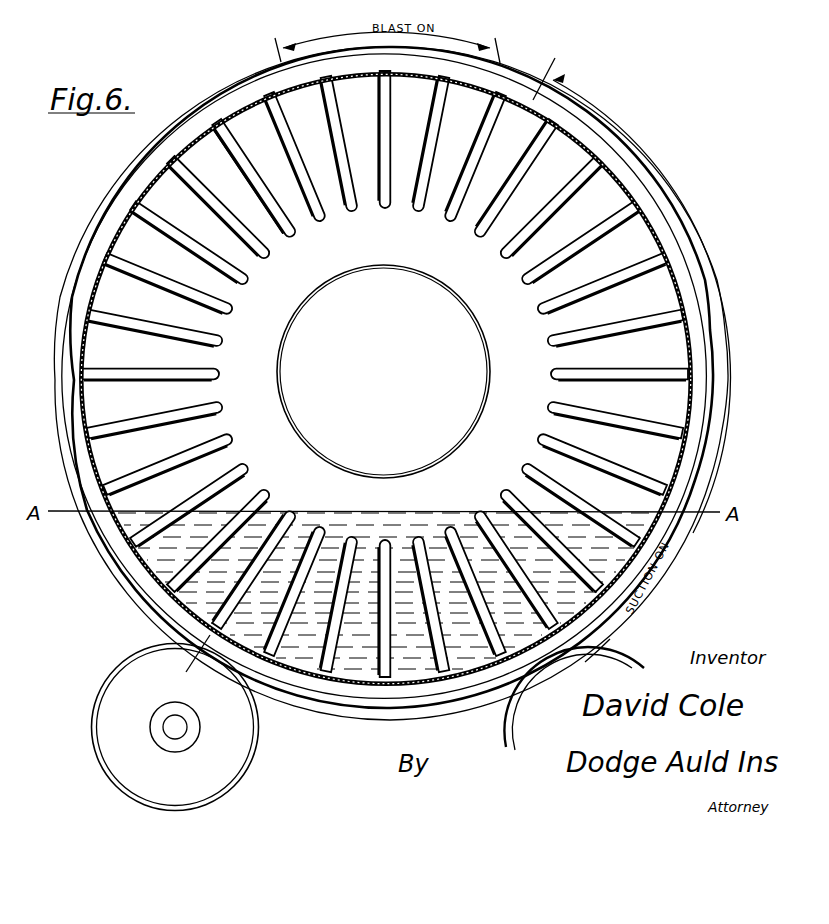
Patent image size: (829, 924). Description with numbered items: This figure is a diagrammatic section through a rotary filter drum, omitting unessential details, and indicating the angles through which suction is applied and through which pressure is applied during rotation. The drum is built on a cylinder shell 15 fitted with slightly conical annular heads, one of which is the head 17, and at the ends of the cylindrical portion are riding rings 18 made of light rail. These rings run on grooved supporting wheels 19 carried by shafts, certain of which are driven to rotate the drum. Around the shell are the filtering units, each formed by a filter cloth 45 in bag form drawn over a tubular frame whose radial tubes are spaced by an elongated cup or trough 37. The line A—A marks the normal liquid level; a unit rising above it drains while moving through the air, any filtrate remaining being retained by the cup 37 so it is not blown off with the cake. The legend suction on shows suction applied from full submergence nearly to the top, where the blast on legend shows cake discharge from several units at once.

The cylinder shell 15 is at (668, 261).
The annular head 17 is at (418, 262).
The riding ring 18 is at (101, 214).
The grooved supporting wheel 19 is at (240, 743).
The cup or trough 37 is at (330, 221).
The filter cloth 45 is at (385, 122).